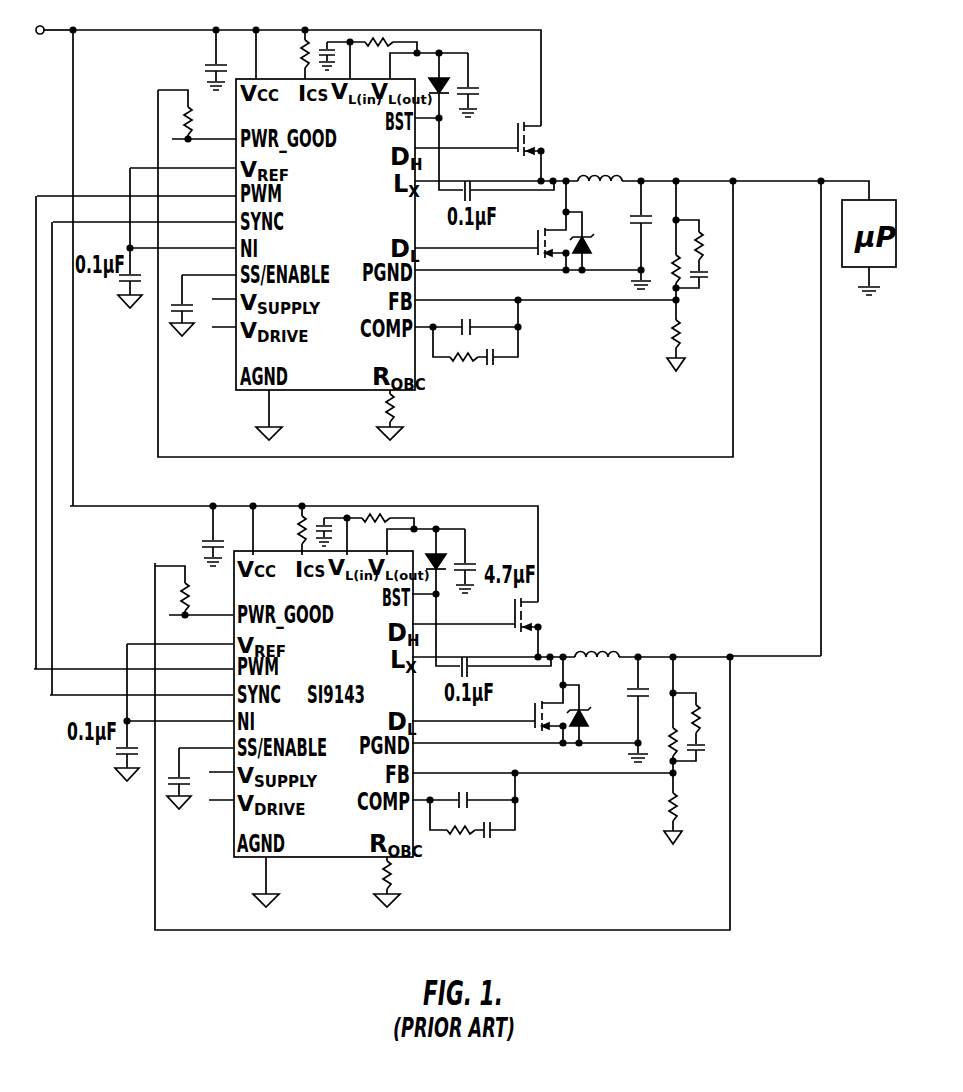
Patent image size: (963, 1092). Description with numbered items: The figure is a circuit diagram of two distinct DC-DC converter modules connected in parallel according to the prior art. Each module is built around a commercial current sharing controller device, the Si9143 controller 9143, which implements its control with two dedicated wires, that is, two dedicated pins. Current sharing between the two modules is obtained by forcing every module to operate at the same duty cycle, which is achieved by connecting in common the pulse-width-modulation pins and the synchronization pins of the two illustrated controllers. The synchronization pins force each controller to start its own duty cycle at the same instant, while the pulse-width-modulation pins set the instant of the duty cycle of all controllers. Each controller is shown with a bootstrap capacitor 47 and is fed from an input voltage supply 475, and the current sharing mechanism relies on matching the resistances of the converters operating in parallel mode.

The SI9143 synchronous buck controller IC 9143 is at (325, 234).
The 4.7 microfarad bootstrap capacitor 47 is at (499, 85).
The input voltage supply 4.75-13.2V 475 is at (104, 32).